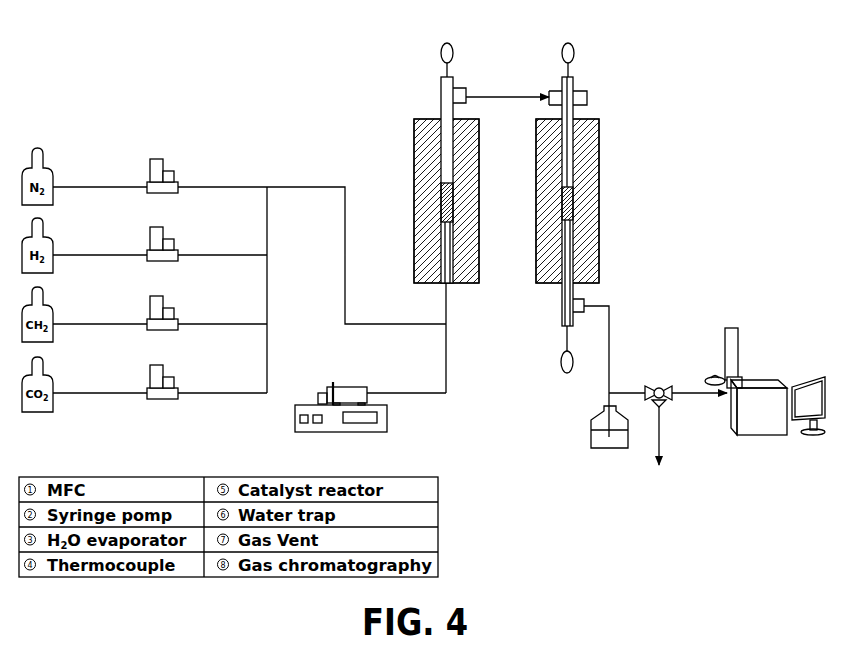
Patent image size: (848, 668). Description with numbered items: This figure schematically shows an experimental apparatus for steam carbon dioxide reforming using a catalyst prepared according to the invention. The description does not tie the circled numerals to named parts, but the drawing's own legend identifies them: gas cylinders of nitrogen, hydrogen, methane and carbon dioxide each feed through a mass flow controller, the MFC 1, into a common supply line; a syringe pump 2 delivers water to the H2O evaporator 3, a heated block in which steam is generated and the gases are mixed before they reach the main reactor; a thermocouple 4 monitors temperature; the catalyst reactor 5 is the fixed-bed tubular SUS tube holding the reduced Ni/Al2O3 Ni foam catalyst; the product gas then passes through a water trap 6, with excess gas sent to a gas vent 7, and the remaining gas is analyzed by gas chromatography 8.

The MFC (mass flow controller) 1 is at (166, 272).
The Syringe pump 2 is at (341, 407).
The H2O evaporator 3 is at (472, 180).
The Thermocouple 4 is at (447, 49).
The Catalyst reactor 5 is at (578, 218).
The Water trap 6 is at (600, 420).
The Gas vent 7 is at (659, 447).
The Gas chromatography 8 is at (765, 381).